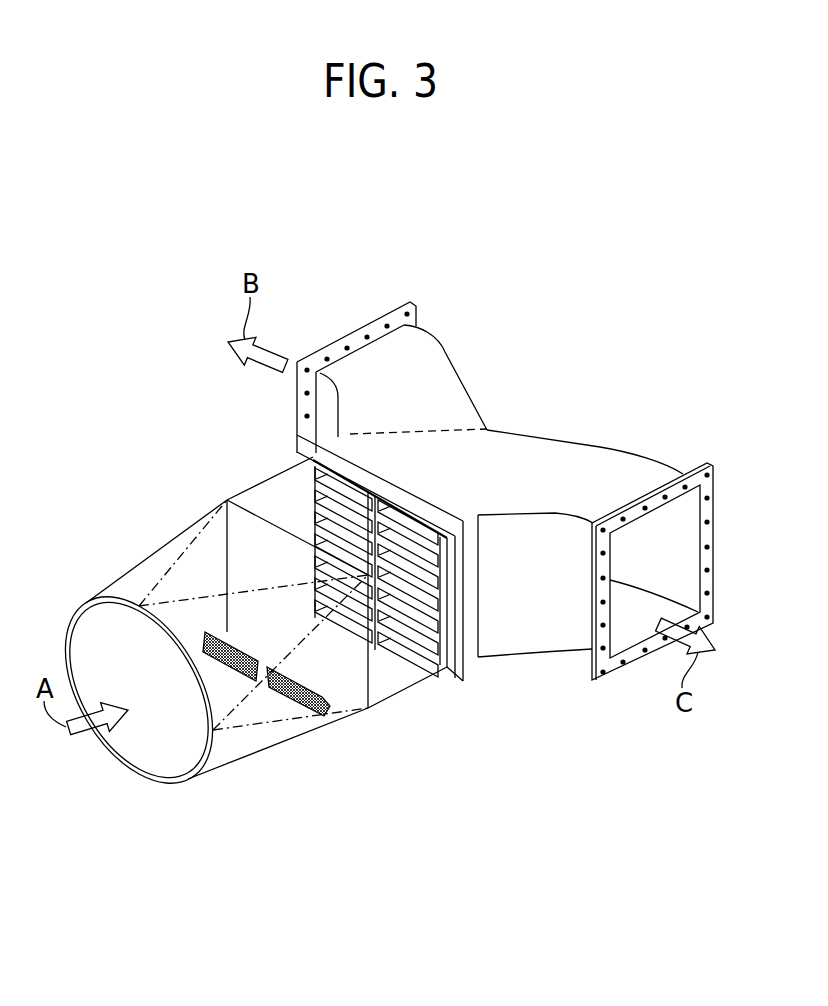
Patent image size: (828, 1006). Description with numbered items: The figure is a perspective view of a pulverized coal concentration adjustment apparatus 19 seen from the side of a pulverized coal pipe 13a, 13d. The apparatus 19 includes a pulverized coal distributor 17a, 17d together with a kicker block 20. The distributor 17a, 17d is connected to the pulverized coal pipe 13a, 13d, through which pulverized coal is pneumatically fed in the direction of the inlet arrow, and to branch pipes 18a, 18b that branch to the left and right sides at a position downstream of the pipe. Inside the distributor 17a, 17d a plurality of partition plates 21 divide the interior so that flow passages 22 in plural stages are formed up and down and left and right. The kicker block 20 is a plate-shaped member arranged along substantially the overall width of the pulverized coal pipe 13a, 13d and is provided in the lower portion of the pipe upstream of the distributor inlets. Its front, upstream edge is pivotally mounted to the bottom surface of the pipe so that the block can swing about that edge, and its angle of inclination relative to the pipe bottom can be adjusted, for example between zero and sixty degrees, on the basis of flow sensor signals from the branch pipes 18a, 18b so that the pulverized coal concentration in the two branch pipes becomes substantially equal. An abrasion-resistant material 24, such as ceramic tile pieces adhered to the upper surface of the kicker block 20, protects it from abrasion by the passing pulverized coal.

The pulverized coal pipe 13a is at (146, 558).
The pulverized coal pipe 13d is at (216, 654).
The pulverized coal distributor 17a is at (476, 276).
The pulverized coal distributor 17d is at (505, 426).
The branch pipe 18a is at (437, 363).
The branch pipe 18b is at (577, 458).
The pulverized coal concentration adjustment apparatus 19 is at (372, 748).
The kicker block 20 is at (280, 708).
The partition plate 21 is at (325, 522).
The flow passage 22 is at (347, 490).
The abrasion-resistant material 24 is at (307, 680).